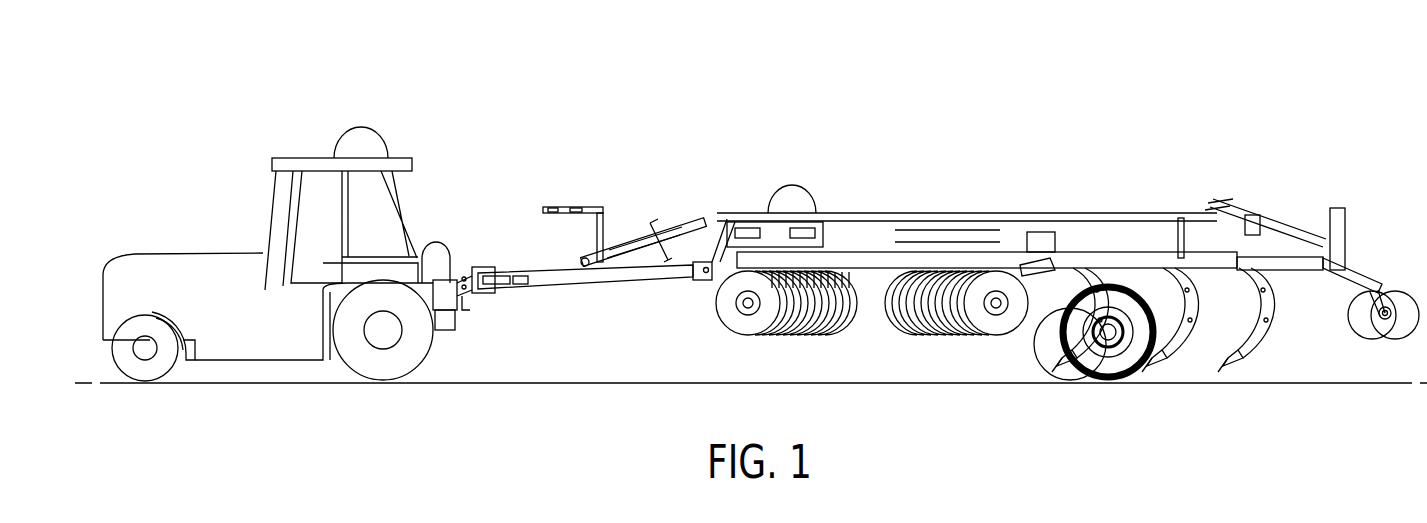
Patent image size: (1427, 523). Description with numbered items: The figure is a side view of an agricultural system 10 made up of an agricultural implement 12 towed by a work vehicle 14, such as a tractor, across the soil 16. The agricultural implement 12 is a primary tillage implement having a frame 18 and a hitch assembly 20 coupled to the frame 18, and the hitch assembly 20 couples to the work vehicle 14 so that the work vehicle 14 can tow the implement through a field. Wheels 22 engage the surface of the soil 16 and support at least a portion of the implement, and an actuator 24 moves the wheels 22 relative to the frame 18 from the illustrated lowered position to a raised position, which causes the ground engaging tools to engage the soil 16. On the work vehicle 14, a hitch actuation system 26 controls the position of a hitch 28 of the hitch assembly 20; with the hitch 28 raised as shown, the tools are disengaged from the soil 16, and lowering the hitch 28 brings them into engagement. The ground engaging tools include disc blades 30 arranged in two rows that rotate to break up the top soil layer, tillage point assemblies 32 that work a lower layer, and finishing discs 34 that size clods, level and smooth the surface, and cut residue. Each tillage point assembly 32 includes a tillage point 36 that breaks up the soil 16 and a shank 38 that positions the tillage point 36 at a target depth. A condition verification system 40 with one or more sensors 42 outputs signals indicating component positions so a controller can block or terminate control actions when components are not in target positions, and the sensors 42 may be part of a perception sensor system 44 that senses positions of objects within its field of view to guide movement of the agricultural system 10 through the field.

The agricultural system 10 is at (805, 88).
The agricultural implement 12 is at (710, 175).
The work vehicle 14 is at (288, 140).
The soil 16 is at (612, 383).
The frame 18 is at (1132, 263).
The hitch assembly 20 is at (607, 283).
The wheels 22 is at (1153, 337).
The actuator 24 is at (1028, 270).
The hitch actuation system 26 is at (433, 293).
The hitch 28 is at (493, 270).
The disc blades 30 is at (920, 343).
The tillage point assemblies 32 is at (1167, 377).
The finishing discs 34 is at (1390, 342).
The tillage point 36 is at (1060, 373).
The shank 38 is at (1040, 340).
The condition verification system 40 is at (490, 120).
The sensors 42 is at (343, 140).
The perception sensor system 44 is at (437, 100).